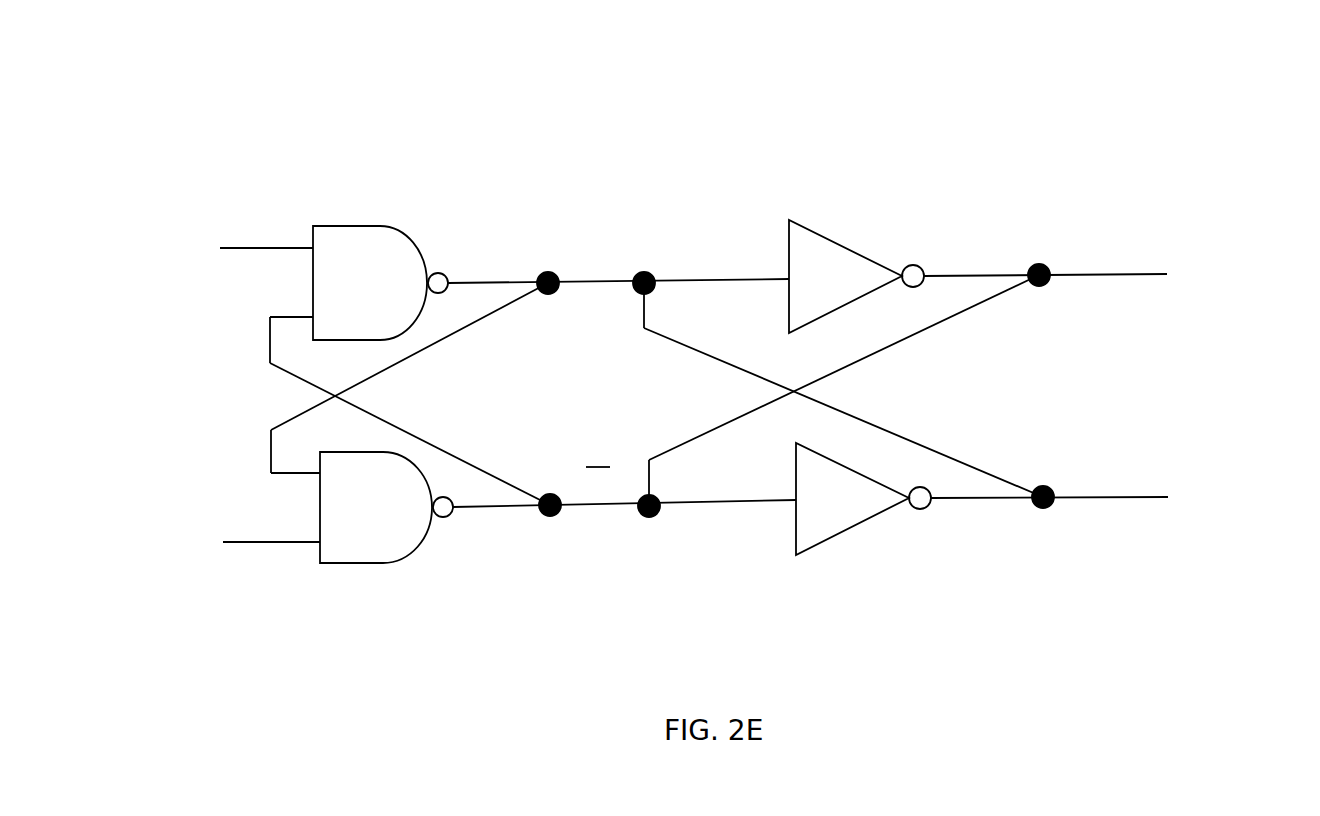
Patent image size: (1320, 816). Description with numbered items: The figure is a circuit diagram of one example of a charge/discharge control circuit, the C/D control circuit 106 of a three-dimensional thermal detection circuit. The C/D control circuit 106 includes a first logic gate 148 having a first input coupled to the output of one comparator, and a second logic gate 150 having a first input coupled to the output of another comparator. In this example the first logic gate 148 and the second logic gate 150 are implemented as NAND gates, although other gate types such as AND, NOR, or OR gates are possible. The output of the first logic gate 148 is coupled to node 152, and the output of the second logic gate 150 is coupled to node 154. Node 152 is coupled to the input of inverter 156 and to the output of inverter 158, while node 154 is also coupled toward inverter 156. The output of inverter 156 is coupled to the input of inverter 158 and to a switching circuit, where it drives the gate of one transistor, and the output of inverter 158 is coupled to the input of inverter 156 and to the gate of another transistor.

The C/D control circuit 106 is at (297, 87).
The first logic gate 148 is at (360, 224).
The second logic gate 150 is at (366, 565).
The node 152 is at (552, 271).
The node 154 is at (552, 517).
The inverter 156 is at (846, 243).
The inverter 158 is at (855, 527).